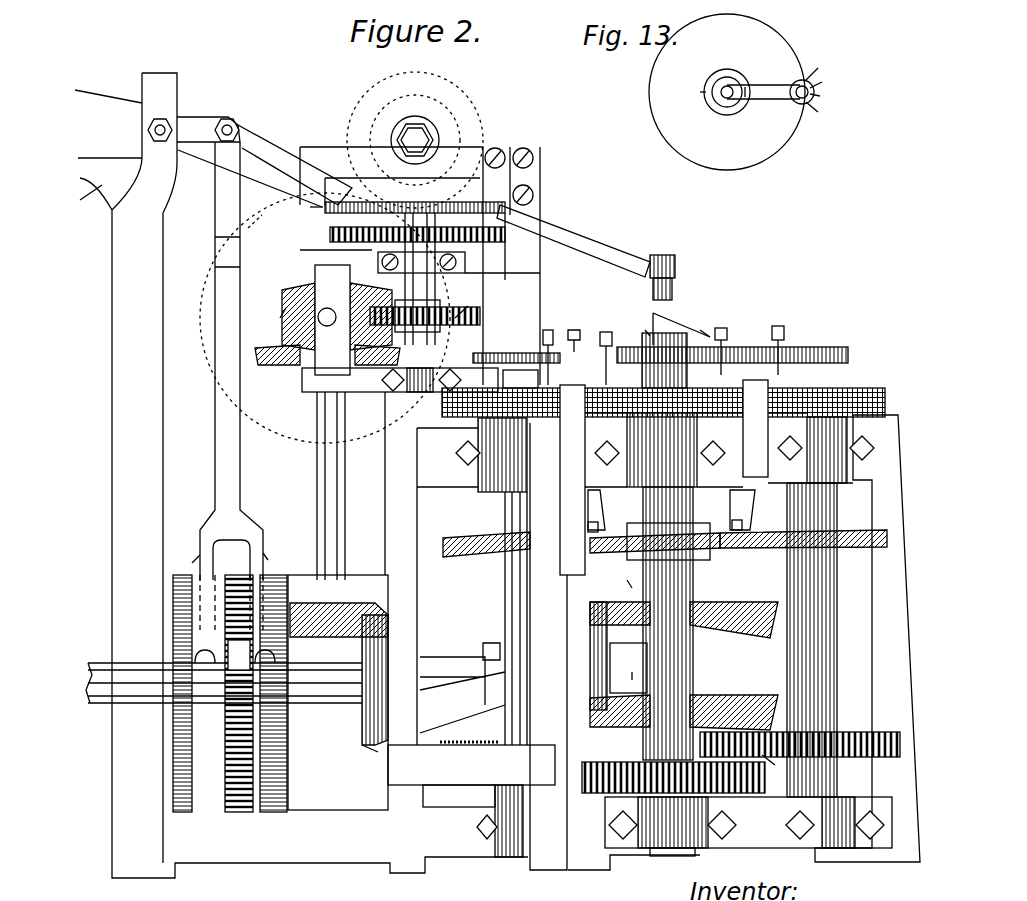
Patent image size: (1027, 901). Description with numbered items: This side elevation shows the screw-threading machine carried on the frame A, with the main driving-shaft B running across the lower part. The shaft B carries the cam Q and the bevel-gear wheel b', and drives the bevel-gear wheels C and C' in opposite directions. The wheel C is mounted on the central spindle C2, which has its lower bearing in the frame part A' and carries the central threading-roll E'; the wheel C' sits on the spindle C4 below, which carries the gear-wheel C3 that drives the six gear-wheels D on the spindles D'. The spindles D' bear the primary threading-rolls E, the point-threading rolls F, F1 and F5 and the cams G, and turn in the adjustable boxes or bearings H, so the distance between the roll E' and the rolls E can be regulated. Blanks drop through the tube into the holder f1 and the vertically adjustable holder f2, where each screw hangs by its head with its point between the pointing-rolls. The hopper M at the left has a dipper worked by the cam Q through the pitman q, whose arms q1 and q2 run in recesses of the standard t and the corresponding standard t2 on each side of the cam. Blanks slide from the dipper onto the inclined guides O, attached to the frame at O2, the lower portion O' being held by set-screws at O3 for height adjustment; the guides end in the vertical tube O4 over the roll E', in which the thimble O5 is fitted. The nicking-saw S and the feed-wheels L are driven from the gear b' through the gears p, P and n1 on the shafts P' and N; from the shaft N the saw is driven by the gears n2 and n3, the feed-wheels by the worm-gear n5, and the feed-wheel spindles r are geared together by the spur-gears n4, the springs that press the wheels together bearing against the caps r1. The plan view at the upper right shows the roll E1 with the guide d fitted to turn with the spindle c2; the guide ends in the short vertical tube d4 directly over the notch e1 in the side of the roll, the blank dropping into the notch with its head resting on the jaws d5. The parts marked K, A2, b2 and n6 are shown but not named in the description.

In FIG. 2, the frame A is at (516, 475).
In FIG. 2, the hopper M is at (108, 150).
In FIG. 2, the ways or guides O is at (250, 162).
In FIG. 2, the link O' is at (573, 241).
In FIG. 2, the attachment point of guides O2 is at (496, 146).
In FIG. 2, the set-screws O3 is at (534, 174).
In FIG. 2, the vertical tube O4 is at (675, 265).
In FIG. 2, the thimble O5 is at (676, 289).
In FIG. 2, the pitman q is at (231, 386).
In FIG. 2, the arm of pitman q1 is at (188, 549).
In FIG. 2, the arm of pitman q2 is at (276, 547).
In FIG. 2, the gear n1 is at (276, 310).
In FIG. 2, the gear n2 is at (325, 318).
In FIG. 2, the gear n3 is at (415, 140).
In FIG. 2, the spur-gears n4 is at (417, 234).
In FIG. 2, the worm-gear n5 is at (425, 310).
In FIG. 2, the nut n6 is at (415, 140).
In FIG. 2, the nicking-saw S is at (415, 134).
In FIG. 2, the feed-wheels L is at (403, 211).
In FIG. 2, the spindles r is at (420, 279).
In FIG. 2, the caps r1 is at (421, 262).
In FIG. 2, the shaft N is at (337, 320).
In FIG. 2, the gear P is at (375, 360).
In FIG. 2, the shaft P' is at (341, 486).
In FIG. 2, the main driving-shaft B is at (295, 683).
In FIG. 2, the standard t is at (189, 693).
In FIG. 2, the collar t2 is at (272, 693).
In FIG. 2, the cam Q is at (239, 693).
In FIG. 2, the gear p is at (339, 674).
In FIG. 2, the bevel-gear wheel b' is at (361, 731).
In FIG. 2, the primary threading-rolls E is at (651, 390).
In FIG. 2, the central threading-roll E' is at (729, 410).
In FIG. 2, the cams G is at (659, 342).
In FIG. 2, the bolt K is at (643, 357).
In FIG. 2, the boxes or bearings H is at (630, 648).
In FIG. 2, the gear-wheels D is at (643, 672).
In FIG. 2, the spindles D' is at (812, 640).
In FIG. 2, the point-threading roll F1 is at (486, 555).
In FIG. 2, the point-threading roll F is at (655, 548).
In FIG. 2, the point-threading roll F5 is at (803, 549).
In FIG. 2, the holder f1 is at (678, 510).
In FIG. 2, the holder f2 is at (678, 520).
In FIG. 2, the part of frame A' is at (625, 590).
In FIG. 2, the frame part A2 is at (636, 683).
In FIG. 2, the box b2 is at (628, 668).
In FIG. 2, the bevel-gear wheel C is at (684, 645).
In FIG. 2, the bevel-gear wheel C' is at (684, 700).
In FIG. 2, the central spindle C2 is at (669, 329).
In FIG. 2, the gear-wheel C3 is at (741, 762).
In FIG. 2, the central spindle C4 is at (748, 838).
In FIG. 2, the guide d is at (695, 323).
In FIG. 13, the guide d is at (763, 82).
In FIG. 13, the central threading-roll E1 is at (727, 92).
In FIG. 13, the central spindle c2 is at (716, 92).
In FIG. 13, the short vertical tube d4 is at (813, 87).
In FIG. 13, the jaws d5 is at (818, 90).
In FIG. 13, the notch e1 is at (816, 94).